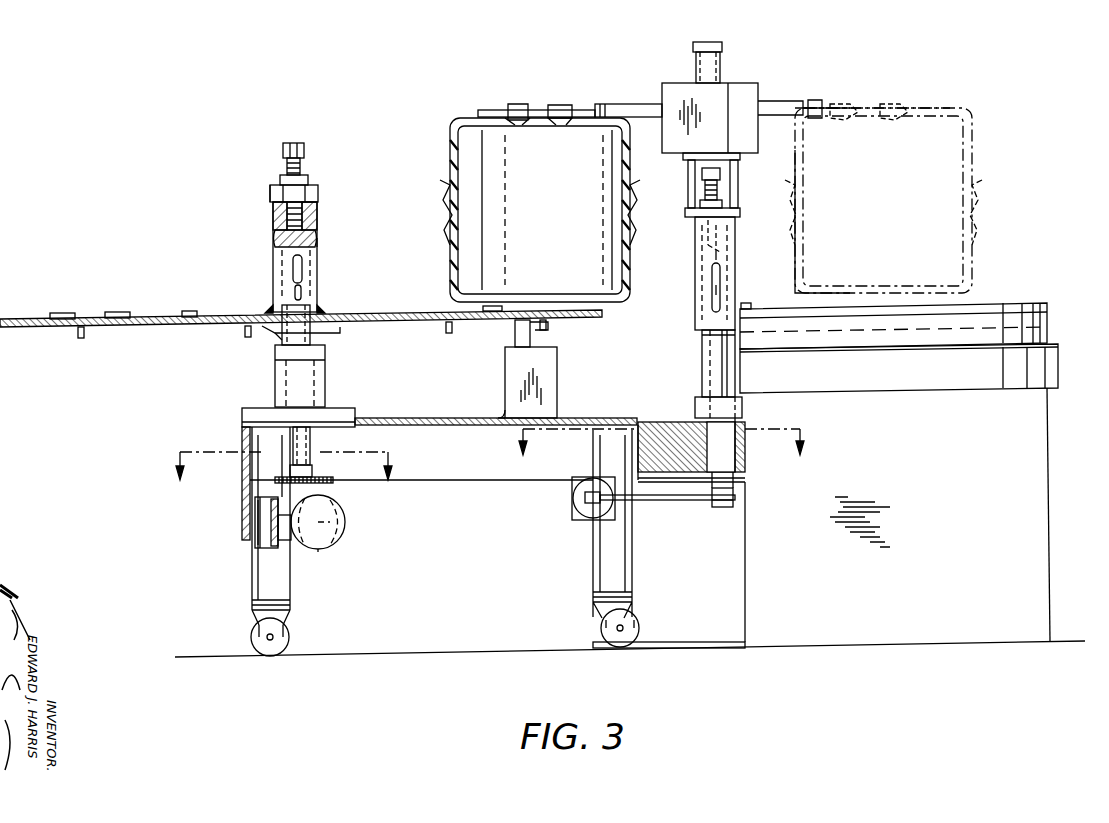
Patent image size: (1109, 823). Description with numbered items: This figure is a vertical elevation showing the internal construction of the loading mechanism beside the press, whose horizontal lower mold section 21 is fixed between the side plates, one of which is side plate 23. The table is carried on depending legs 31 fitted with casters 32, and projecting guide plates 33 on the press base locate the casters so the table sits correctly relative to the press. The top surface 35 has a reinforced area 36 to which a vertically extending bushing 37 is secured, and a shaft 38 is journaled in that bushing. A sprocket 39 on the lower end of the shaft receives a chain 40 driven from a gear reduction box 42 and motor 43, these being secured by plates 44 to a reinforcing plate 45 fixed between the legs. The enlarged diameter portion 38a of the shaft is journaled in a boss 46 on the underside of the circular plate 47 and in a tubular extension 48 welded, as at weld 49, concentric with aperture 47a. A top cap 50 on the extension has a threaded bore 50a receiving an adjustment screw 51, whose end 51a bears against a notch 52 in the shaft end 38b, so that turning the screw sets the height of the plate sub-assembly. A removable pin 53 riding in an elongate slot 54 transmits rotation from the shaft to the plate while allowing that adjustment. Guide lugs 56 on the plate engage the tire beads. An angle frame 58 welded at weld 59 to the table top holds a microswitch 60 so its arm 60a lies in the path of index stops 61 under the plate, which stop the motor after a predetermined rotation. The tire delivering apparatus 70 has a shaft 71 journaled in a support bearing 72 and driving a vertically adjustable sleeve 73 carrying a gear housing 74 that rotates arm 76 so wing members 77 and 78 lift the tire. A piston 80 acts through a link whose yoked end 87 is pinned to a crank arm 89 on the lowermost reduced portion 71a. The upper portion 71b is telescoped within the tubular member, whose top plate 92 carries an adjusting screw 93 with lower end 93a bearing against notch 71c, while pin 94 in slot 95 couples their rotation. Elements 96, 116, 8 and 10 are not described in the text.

The lower mold section 21 is at (1010, 304).
The side plate 23 is at (1048, 513).
The leg 31 is at (252, 573).
The caster 32 is at (258, 650).
The guide plate 33 is at (645, 649).
The top surface 35 is at (463, 425).
The reinforced area 36 is at (351, 410).
The bushing 37 is at (326, 382).
The shaft 38 is at (311, 452).
The enlarged diameter portion 38a is at (311, 338).
The shaft end 38b is at (318, 240).
The sprocket 39 is at (322, 484).
The chain 40 is at (334, 477).
The gear reduction box 42 is at (340, 520).
The motor 43 is at (335, 542).
The plate 44 is at (291, 535).
The reinforcing plate 45 is at (258, 530).
The boss 46 is at (276, 333).
The circular plate 47 is at (168, 325).
The aperture 47a is at (278, 335).
The tubular extension 48 is at (274, 255).
The weld 49 is at (273, 306).
The top cap 50 is at (319, 193).
The threaded bore 50a is at (270, 203).
The adjustment screw 51 is at (303, 150).
The screw end 51a is at (317, 228).
The notch 52 is at (275, 238).
The removable pin 53 is at (302, 275).
The elongate slot 54 is at (302, 291).
The guide lug 56 is at (63, 314).
The angle frame 58 is at (558, 379).
The weld 59 is at (500, 416).
The microswitch 60 is at (514, 328).
The microswitch arm 60a is at (549, 331).
The index stop 61 is at (79, 337).
The tire delivering apparatus 70 is at (742, 368).
The shaft 71 is at (702, 375).
The lowermost reduced portion 71a is at (736, 484).
The upper portion 71b is at (705, 340).
The notch 71c is at (736, 258).
The support bearing 72 is at (746, 455).
The sleeve 73 is at (695, 275).
The gear housing 74 is at (752, 85).
The arm 76 is at (590, 108).
The wing member 77 is at (563, 104).
The wing member 78 is at (521, 104).
The piston 80 is at (573, 492).
The yoked end 87 is at (588, 505).
The crank arm 89 is at (678, 501).
The top plate 92 is at (697, 224).
The adjusting screw 93 is at (721, 172).
The lower end 93a is at (731, 240).
The pin 94 is at (716, 290).
The slot 95 is at (718, 300).
The frame 96 is at (689, 195).
The arm 116 is at (642, 104).
The section line 8 is at (658, 450).
The section line 10 is at (282, 470).